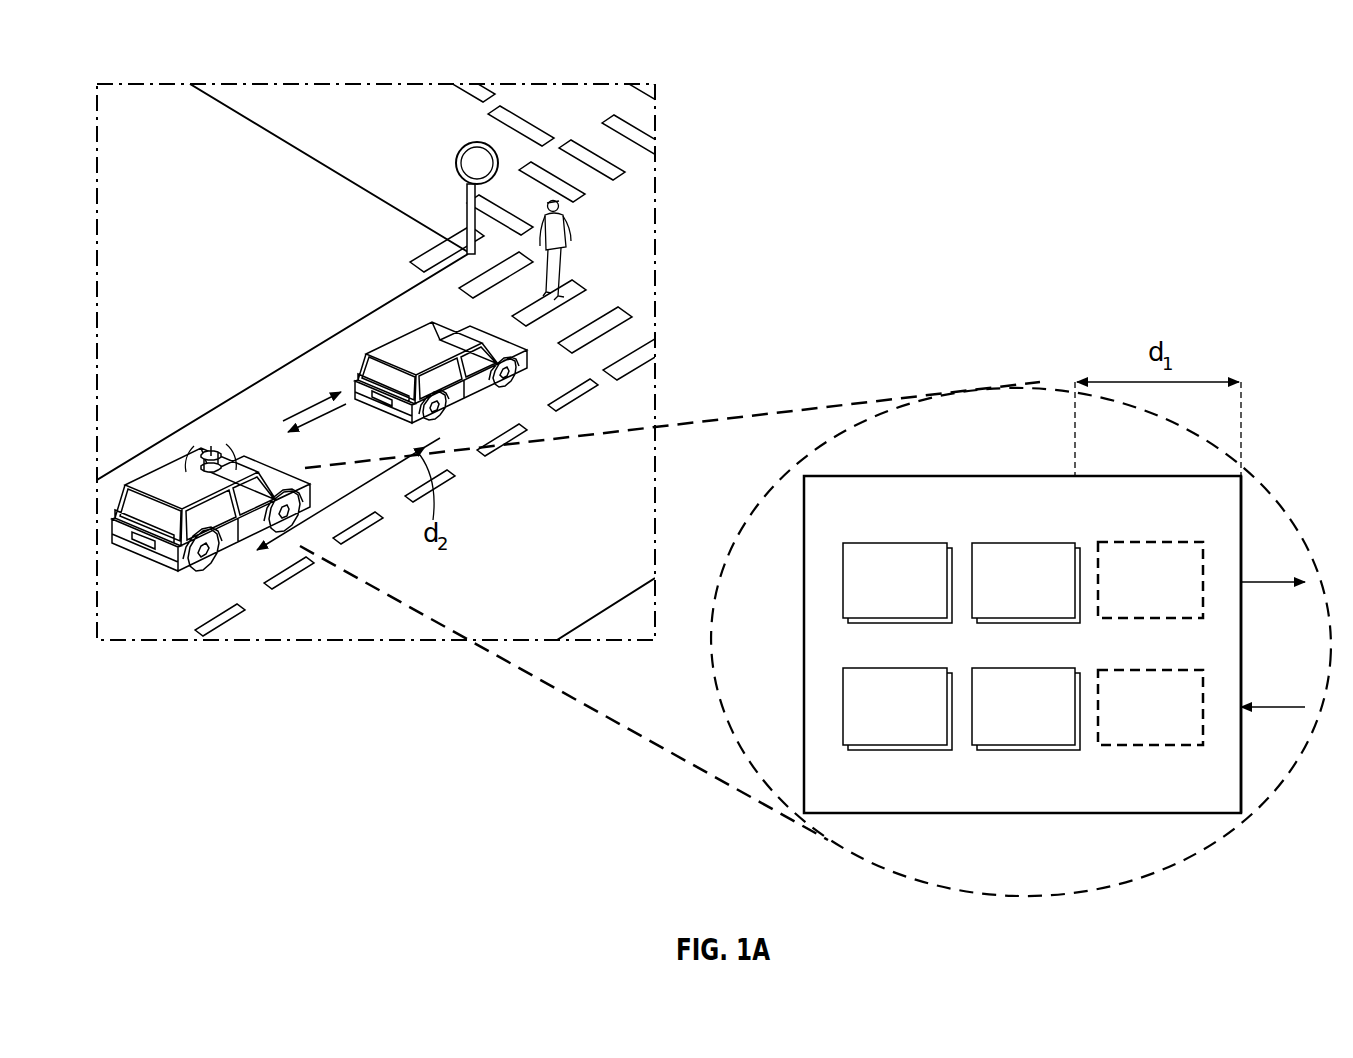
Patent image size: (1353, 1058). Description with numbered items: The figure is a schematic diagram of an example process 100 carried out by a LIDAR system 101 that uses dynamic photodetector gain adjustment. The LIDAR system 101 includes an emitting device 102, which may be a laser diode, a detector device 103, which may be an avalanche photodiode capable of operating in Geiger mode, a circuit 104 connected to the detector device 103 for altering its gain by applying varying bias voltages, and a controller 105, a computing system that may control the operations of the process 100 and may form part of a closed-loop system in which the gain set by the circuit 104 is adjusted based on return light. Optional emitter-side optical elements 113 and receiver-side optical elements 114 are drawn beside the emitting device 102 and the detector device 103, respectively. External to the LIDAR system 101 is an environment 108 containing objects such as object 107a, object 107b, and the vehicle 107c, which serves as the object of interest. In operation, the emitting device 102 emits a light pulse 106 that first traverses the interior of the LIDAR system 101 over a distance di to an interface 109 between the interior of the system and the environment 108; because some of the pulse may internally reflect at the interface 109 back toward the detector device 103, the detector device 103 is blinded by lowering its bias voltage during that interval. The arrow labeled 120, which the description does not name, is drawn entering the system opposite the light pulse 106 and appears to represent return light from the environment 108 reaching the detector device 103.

The process 100 is at (1057, 172).
The LIDAR system 101 is at (209, 444).
The emitting device 102 is at (113, 522).
The detector device 103 is at (1027, 748).
The circuit 104 is at (897, 748).
The controller 105 is at (893, 543).
The light pulse 106 is at (300, 410).
The object 107a is at (560, 212).
The object 107b is at (471, 142).
The vehicle 107c is at (410, 337).
The environment 108 is at (596, 116).
The interface 109 is at (1242, 540).
The emitter-side optical element 113 is at (1130, 542).
The receiver-side optical element 114 is at (1157, 747).
The reflected light beam 120 is at (330, 400).